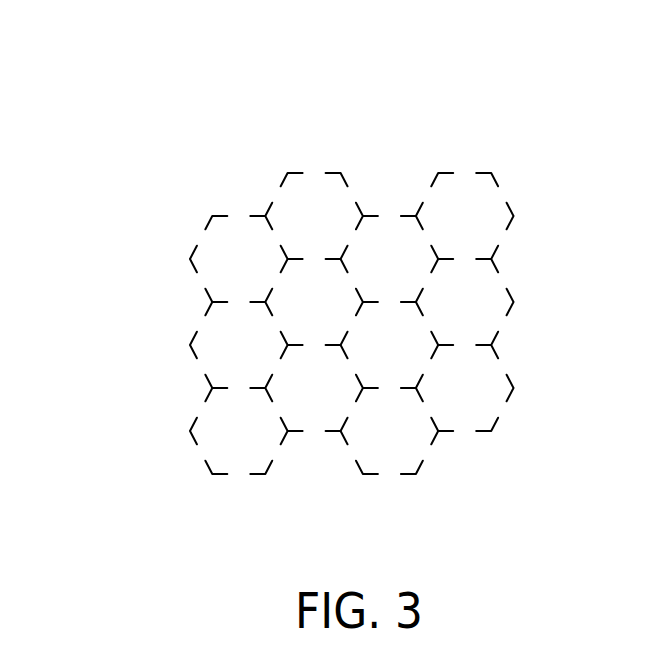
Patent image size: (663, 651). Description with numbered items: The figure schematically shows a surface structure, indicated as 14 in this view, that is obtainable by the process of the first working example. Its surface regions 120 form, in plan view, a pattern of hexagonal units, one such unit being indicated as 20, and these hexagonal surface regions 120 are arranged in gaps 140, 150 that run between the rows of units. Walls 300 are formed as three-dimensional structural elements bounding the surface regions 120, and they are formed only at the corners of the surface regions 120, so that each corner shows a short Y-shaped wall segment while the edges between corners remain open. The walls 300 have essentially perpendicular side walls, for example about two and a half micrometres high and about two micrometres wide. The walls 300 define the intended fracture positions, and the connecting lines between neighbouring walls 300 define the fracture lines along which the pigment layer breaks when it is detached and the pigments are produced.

The lattice structure 14 is at (175, 182).
The cell 20 is at (510, 222).
The surface regions 120 is at (475, 402).
The gaps 140 is at (177, 370).
The gaps 150 is at (182, 284).
The walls 300 is at (413, 206).